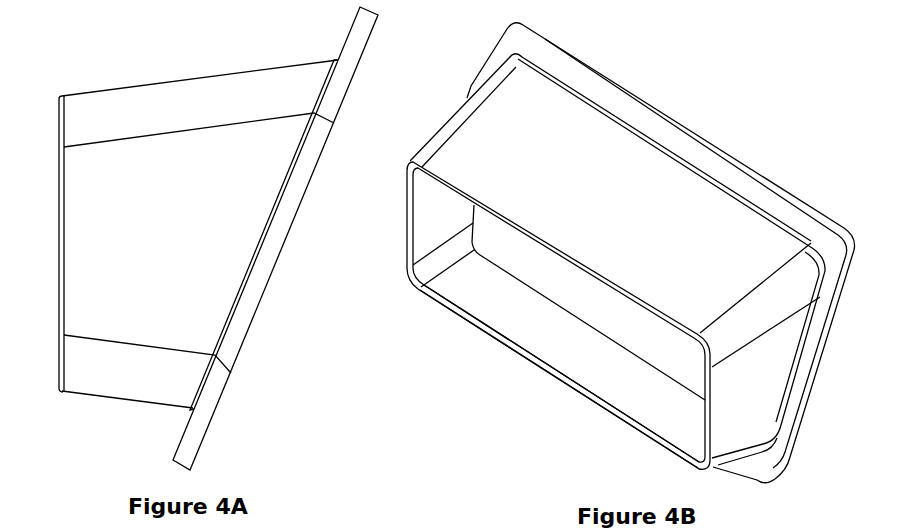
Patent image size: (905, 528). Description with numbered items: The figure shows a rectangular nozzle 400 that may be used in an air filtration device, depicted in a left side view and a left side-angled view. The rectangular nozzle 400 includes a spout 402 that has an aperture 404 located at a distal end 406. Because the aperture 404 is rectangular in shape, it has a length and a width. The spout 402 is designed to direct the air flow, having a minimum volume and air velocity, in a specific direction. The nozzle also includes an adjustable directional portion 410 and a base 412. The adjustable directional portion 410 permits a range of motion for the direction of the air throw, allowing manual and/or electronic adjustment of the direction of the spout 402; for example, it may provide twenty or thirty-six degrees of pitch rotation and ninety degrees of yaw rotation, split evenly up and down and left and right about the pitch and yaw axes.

In FIG. 4B, the rectangular nozzle 400 is at (436, 91).
In FIG. 4A, the spout 402 is at (160, 157).
In FIG. 4B, the spout 402 is at (600, 210).
In FIG. 4B, the aperture 404 is at (593, 305).
In FIG. 4A, the distal end 406 is at (63, 96).
In FIG. 4B, the distal end 406 is at (577, 388).
In FIG. 4A, the adjustable directional portion 410 is at (315, 118).
In FIG. 4B, the adjustable directional portion 410 is at (648, 147).
In FIG. 4A, the base 412 is at (291, 207).
In FIG. 4B, the base 412 is at (678, 138).